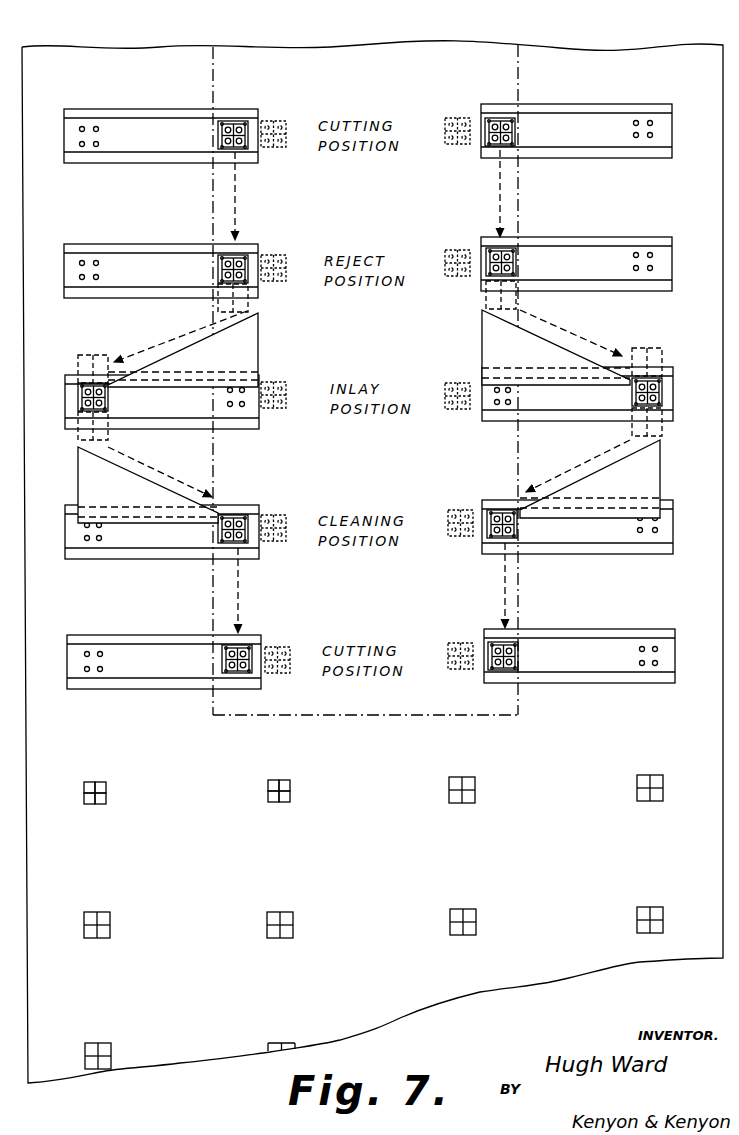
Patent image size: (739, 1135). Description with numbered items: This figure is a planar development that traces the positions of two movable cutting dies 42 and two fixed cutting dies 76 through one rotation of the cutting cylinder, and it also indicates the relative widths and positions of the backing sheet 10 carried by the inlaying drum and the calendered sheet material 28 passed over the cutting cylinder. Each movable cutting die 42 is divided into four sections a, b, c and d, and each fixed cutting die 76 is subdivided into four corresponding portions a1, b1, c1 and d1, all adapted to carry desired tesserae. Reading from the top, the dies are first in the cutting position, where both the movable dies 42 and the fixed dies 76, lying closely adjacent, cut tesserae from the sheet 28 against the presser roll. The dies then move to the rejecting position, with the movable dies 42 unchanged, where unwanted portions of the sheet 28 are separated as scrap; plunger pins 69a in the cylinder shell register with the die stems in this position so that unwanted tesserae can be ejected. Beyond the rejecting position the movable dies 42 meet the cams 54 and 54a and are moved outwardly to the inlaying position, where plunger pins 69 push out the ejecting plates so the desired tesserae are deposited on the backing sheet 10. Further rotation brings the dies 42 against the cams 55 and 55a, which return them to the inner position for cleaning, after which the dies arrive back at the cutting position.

The backing sheet 10 is at (633, 48).
The sheet material 28 is at (213, 62).
The movable cutting die 42 is at (505, 118).
The cam 54 is at (259, 338).
The cam 54a is at (482, 343).
The cam 55 is at (78, 482).
The cam 55a is at (655, 463).
The plunger pin 69 is at (79, 129).
The plunger pin 69a is at (244, 405).
The fixed cutting die 76 is at (287, 121).
The cutting die section a is at (243, 254).
The cutting die section b is at (247, 279).
The cutting die section c is at (222, 273).
The cutting die section d is at (226, 254).
The fixed cutting die portion a1 is at (286, 254).
The fixed cutting die portion b1 is at (286, 279).
The fixed cutting die portion c1 is at (262, 279).
The fixed cutting die portion d1 is at (265, 254).